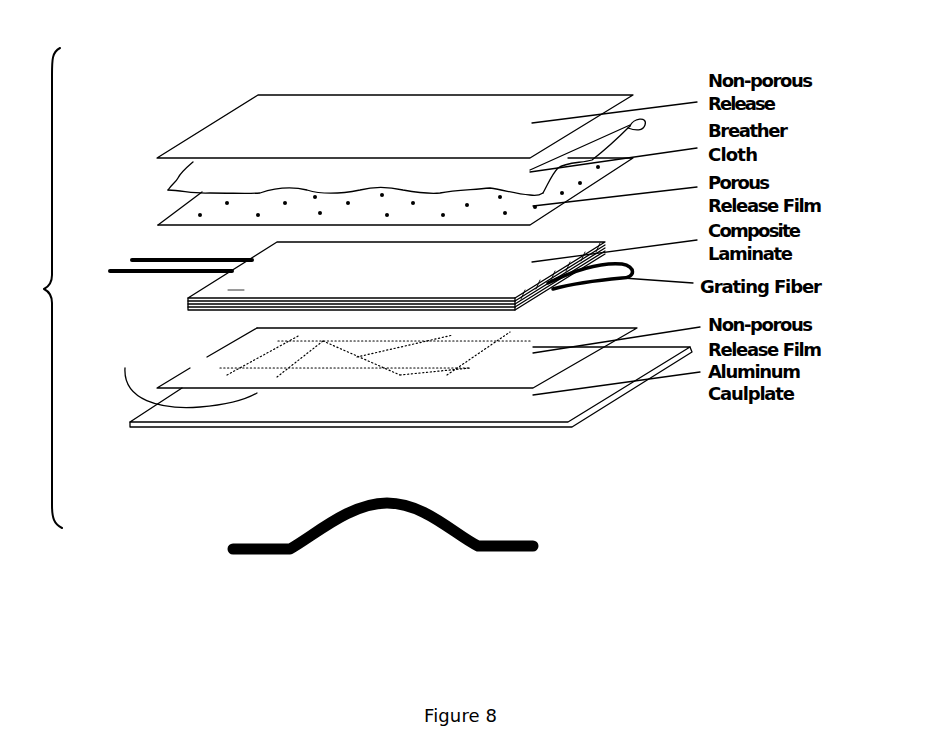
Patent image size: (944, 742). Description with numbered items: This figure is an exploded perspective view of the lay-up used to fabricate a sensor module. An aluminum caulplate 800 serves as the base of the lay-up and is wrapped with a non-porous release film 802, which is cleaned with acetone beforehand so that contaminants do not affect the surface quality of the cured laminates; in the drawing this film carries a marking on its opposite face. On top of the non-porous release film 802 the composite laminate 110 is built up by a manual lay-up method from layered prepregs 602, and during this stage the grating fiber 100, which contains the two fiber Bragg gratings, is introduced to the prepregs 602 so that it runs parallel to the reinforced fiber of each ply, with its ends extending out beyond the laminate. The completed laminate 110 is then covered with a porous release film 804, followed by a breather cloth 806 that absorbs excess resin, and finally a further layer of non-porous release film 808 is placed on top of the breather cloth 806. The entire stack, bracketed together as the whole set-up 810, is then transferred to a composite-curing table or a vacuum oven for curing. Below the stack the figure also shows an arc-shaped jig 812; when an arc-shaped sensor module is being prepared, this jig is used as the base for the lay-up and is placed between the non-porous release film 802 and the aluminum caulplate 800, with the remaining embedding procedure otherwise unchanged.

The grating fiber 100 is at (110, 271).
The composite laminate 110 is at (165, 303).
The prepreg 602 is at (235, 290).
The aluminum caulplate 800 is at (157, 432).
The non-porous release film 802 is at (493, 380).
The porous release film 804 is at (545, 210).
The breather cloth 806 is at (165, 186).
The non-porous release film 808 is at (475, 113).
The set-up 810 is at (35, 288).
The arc-shaped jig 812 is at (302, 528).